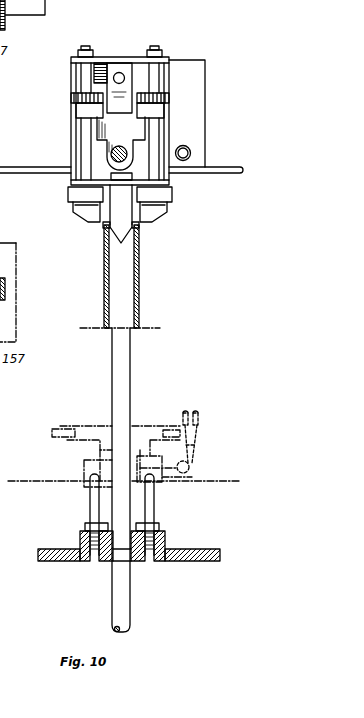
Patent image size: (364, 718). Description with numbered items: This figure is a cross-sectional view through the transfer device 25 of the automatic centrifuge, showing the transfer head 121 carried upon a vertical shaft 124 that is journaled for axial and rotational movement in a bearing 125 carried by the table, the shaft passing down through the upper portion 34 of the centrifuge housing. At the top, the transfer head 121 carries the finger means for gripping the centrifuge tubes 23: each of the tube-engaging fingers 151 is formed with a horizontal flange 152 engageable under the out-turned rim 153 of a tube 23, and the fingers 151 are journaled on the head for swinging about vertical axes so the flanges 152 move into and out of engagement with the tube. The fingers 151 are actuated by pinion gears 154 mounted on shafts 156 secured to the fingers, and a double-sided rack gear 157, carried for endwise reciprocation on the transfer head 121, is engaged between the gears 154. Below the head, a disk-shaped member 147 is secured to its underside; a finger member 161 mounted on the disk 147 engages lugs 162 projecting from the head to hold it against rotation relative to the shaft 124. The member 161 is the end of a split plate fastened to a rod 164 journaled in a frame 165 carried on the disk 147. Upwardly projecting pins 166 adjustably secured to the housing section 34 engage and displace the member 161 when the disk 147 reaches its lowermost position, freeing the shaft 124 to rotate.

The transfer device 25 is at (186, 46).
The transfer head 121 is at (68, 147).
The frame 165 is at (197, 70).
The double-sided rack gear 157 is at (133, 82).
The pinion gears 154 is at (71, 98).
The shafts 156 is at (83, 131).
The rod 164 is at (191, 154).
The tube-engaging fingers 151 is at (78, 208).
The horizontal flange 152 is at (103, 229).
The out-turned rims 153 is at (148, 224).
The centrifuge tubes 23 is at (104, 279).
The vertical shaft 124 is at (131, 366).
The disk-shaped member 147 is at (183, 488).
The lugs 162 is at (200, 428).
The finger member 161 is at (197, 444).
The upwardly projecting pins 166 is at (90, 515).
The bearing 125 is at (138, 562).
The upper portion of housing 34 is at (55, 562).